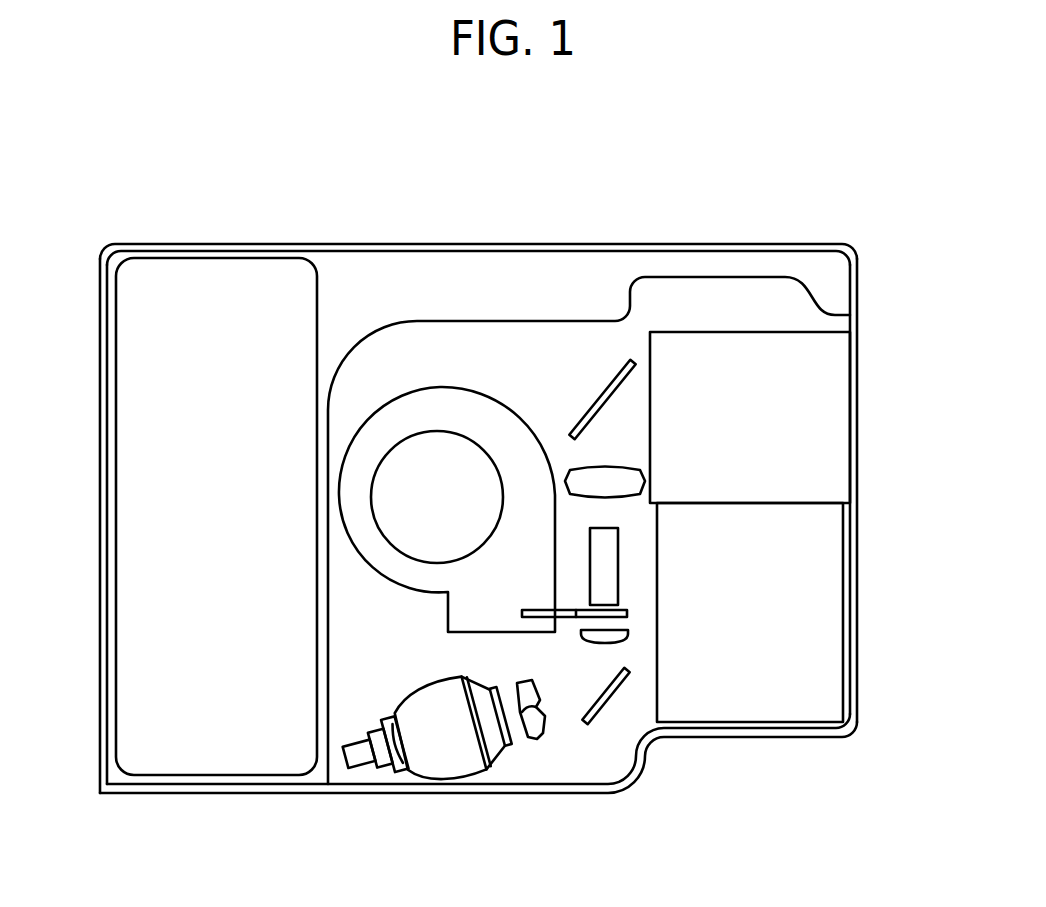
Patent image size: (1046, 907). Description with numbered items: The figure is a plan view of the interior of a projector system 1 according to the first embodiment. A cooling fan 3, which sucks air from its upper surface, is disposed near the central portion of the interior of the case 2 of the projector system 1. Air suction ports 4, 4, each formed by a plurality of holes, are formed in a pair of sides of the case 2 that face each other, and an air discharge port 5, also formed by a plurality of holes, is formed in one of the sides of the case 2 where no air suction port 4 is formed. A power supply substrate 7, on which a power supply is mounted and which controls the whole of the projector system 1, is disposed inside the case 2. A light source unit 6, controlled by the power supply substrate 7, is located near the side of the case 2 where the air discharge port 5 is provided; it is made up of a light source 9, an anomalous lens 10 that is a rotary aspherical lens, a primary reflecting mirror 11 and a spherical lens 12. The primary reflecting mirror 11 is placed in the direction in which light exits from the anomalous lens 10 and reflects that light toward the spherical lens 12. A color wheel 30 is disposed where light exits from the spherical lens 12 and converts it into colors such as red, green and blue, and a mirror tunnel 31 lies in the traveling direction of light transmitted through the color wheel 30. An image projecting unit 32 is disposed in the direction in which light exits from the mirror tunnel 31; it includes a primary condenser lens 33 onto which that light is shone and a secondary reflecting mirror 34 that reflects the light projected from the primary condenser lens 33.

The projector system 1 is at (473, 172).
The case 2 is at (197, 244).
The cooling fan 3 is at (409, 412).
The air suction port 4 is at (100, 429).
The air discharge port 5 is at (488, 793).
The light source unit 6 is at (612, 750).
The power supply substrate 7 is at (116, 528).
The light source 9 is at (448, 768).
The anomalous lens 10 is at (543, 740).
The primary reflecting mirror 11 is at (613, 690).
The spherical lens 12 is at (615, 642).
The color wheel 30 is at (547, 633).
The mirror tunnel 31 is at (622, 573).
The image projecting unit 32 is at (873, 428).
The primary condenser lens 33 is at (627, 481).
The secondary reflecting mirror 34 is at (607, 383).